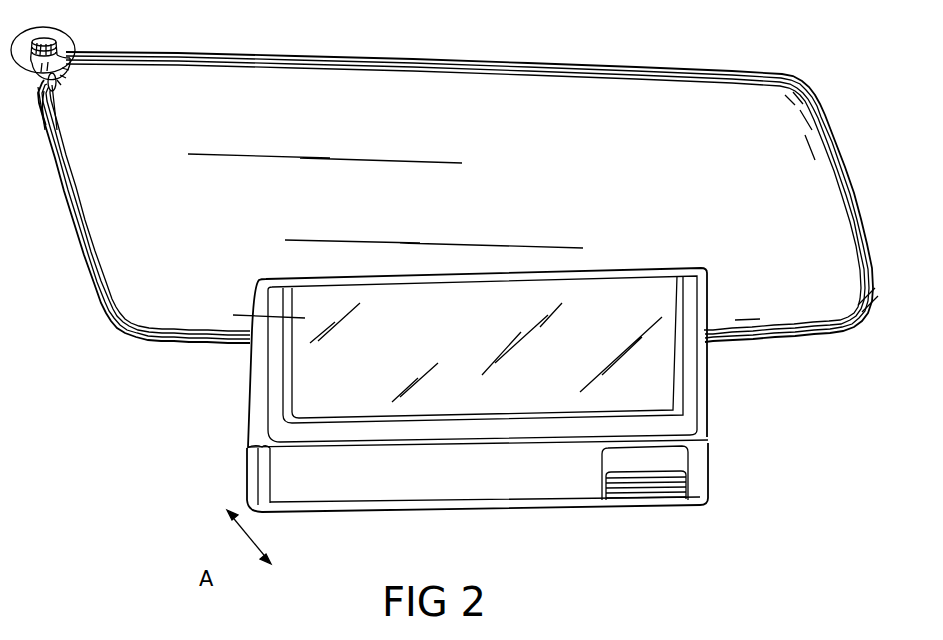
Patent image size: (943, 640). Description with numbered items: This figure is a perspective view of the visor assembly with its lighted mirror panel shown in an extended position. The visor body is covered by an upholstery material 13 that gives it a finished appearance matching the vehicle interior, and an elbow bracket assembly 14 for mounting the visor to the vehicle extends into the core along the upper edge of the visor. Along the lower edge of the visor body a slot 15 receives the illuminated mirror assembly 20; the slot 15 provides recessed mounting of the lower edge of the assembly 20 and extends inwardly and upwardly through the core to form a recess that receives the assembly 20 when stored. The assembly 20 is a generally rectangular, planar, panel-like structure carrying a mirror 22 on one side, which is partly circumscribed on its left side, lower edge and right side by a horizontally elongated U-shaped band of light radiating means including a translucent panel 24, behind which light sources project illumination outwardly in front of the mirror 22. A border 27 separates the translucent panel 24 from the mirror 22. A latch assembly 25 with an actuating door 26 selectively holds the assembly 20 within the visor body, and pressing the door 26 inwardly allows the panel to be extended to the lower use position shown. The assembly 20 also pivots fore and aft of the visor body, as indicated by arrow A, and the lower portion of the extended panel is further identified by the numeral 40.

The upholstery material 13 is at (579, 169).
The elbow bracket assembly 14 is at (71, 29).
The slot 15 is at (668, 270).
The illuminated mirror assembly 20 is at (712, 431).
The mirror 22 is at (466, 345).
The translucent panel 24 is at (280, 366).
The latch assembly 25 is at (634, 509).
The actuating door 26 is at (648, 475).
The border 27 is at (293, 397).
The lower body of housing 40 is at (539, 509).